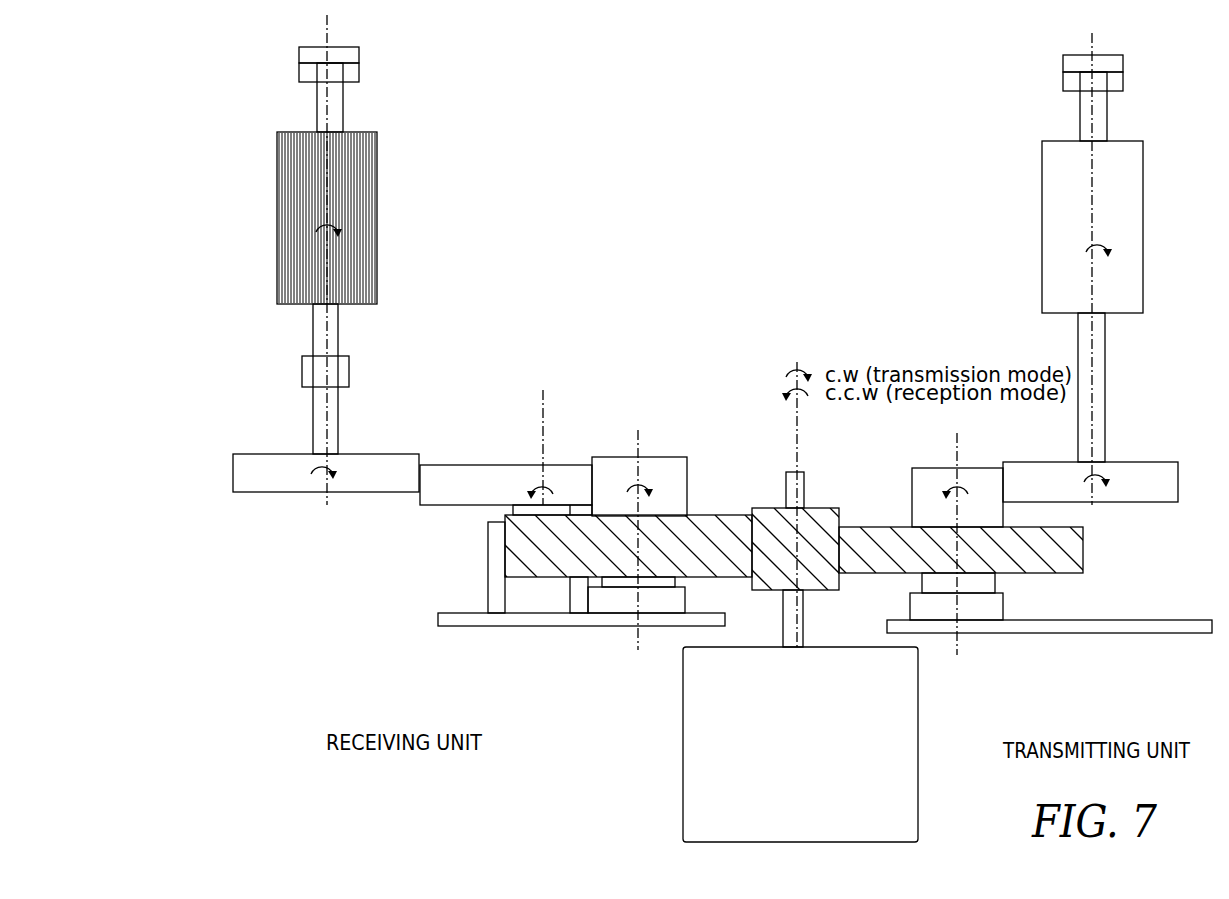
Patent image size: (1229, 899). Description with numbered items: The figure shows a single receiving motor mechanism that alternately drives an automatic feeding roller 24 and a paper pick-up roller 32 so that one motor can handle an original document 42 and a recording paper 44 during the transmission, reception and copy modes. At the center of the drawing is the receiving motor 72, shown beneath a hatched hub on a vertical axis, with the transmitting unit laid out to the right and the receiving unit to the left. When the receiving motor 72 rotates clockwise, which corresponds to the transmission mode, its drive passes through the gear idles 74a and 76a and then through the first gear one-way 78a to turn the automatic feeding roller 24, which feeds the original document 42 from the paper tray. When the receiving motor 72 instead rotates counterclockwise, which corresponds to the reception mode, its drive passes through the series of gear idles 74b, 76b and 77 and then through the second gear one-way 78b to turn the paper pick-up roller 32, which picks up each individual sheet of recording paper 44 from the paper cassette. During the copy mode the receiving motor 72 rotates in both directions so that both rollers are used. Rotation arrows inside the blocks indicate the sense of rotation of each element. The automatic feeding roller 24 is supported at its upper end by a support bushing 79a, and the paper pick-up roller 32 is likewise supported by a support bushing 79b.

The automatic feeding roller 24 is at (1105, 367).
The paper pick-up roller 32 is at (339, 342).
The original document 42 is at (1142, 248).
The recording paper 44 is at (380, 218).
The receiving motor 72 is at (784, 791).
The gear idle 74a is at (1083, 565).
The gear idle 74b is at (508, 562).
The gear idle 76a is at (937, 468).
The gear idle 76b is at (657, 457).
The gear idle 77 is at (455, 465).
The first gear one-way 78a is at (1143, 462).
The second gear one-way 78b is at (280, 454).
The support bushing 79a is at (1108, 57).
The support bushing 79b is at (357, 48).